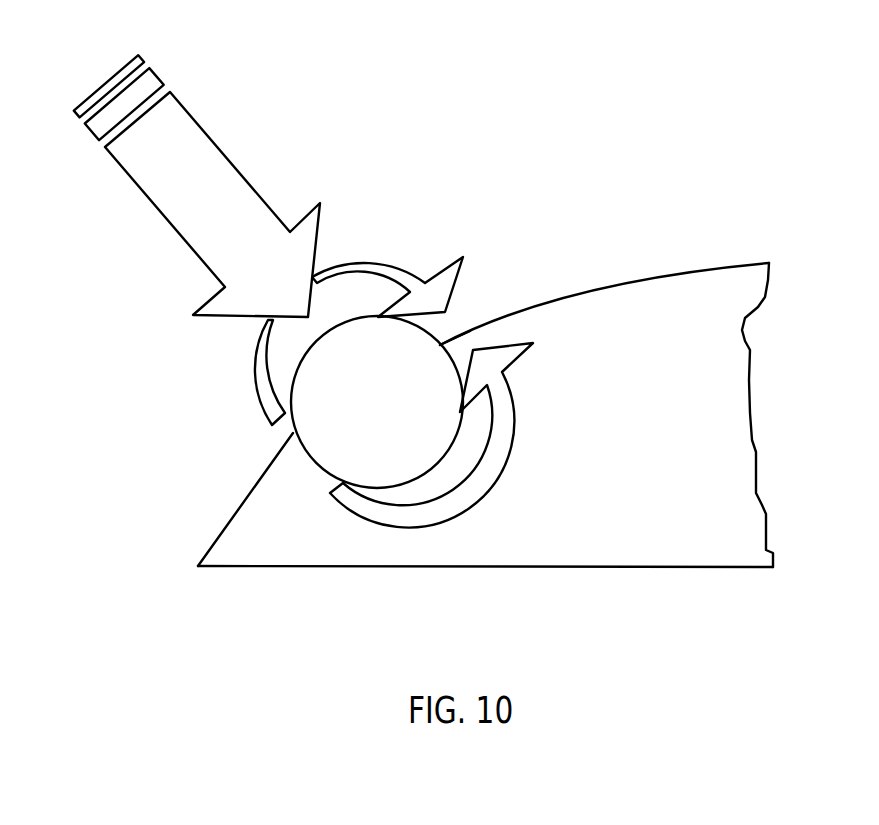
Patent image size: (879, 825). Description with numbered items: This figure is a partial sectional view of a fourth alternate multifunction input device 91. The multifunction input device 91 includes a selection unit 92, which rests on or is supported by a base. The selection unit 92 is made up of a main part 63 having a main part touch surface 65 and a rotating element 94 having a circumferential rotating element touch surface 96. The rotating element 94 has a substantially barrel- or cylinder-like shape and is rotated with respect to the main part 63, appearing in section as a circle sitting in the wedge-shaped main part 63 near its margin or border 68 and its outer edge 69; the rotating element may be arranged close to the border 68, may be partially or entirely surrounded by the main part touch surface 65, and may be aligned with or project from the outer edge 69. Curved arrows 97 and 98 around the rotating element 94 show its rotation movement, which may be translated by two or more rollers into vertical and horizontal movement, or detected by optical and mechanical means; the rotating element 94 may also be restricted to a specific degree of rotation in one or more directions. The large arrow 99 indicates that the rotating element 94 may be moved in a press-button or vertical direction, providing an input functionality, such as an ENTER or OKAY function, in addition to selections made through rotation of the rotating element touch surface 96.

The main part 63 is at (604, 281).
The main part touch surface 65 is at (610, 287).
The margin or border 68 is at (192, 545).
The outer edge 69 is at (193, 565).
The multifunction input device 91 is at (448, 321).
The selection unit 92 is at (660, 162).
The rotating element 94 is at (320, 473).
The rotating element touch surface 96 is at (437, 335).
The arrow 97 is at (378, 261).
The arrow 98 is at (512, 425).
The arrow 99 is at (217, 165).